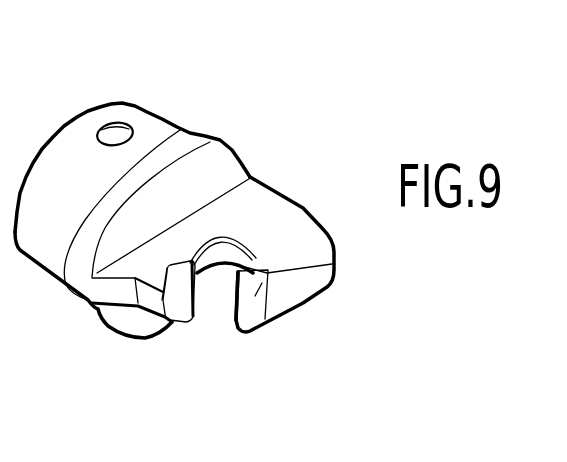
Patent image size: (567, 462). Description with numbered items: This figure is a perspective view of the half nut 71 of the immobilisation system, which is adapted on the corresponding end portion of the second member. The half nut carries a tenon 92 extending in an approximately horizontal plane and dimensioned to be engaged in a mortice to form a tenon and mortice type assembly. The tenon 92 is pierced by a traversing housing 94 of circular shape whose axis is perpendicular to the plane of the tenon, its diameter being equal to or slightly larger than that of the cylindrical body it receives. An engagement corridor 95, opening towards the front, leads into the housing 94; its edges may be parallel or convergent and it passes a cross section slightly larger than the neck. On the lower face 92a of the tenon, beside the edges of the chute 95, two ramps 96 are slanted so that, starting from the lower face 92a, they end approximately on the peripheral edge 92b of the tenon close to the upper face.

The half nut 71 is at (124, 99).
The tenon 92 is at (304, 207).
The lower face of the tenon 92a is at (258, 207).
The peripheral edge of the tenon 92b is at (328, 267).
The traversing housing 94 is at (221, 250).
The engagement corridor 95 is at (213, 312).
The ramps 96 is at (271, 272).